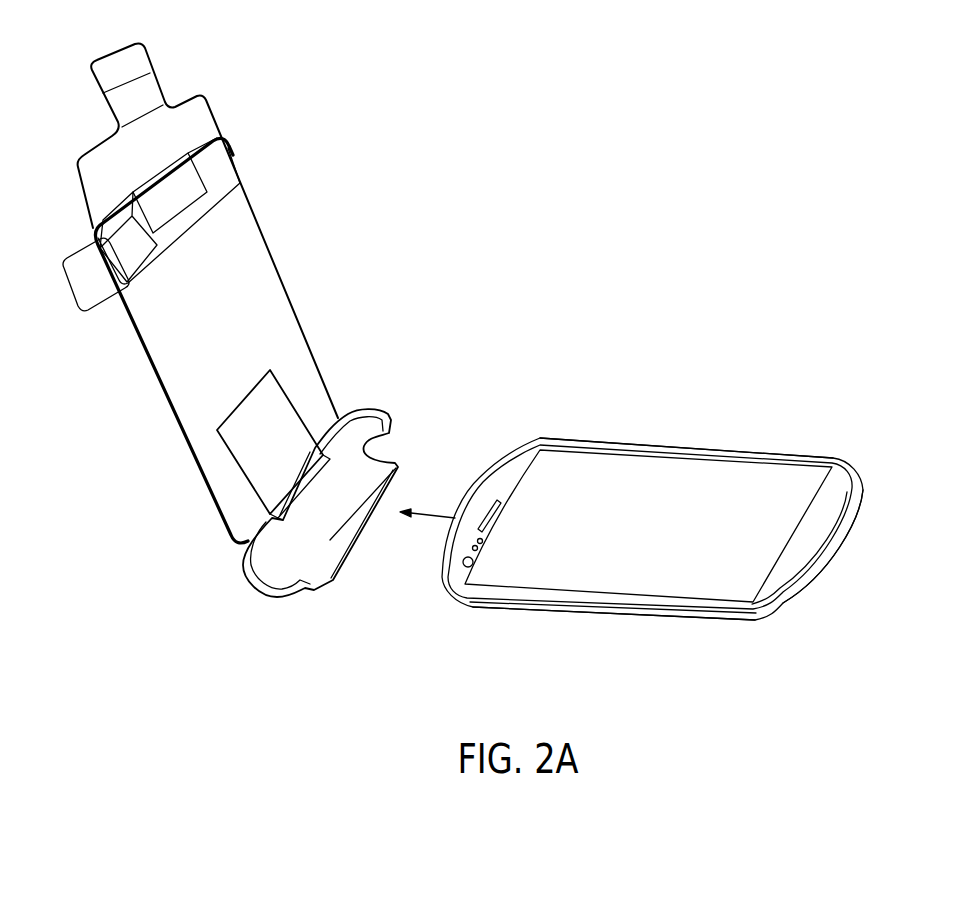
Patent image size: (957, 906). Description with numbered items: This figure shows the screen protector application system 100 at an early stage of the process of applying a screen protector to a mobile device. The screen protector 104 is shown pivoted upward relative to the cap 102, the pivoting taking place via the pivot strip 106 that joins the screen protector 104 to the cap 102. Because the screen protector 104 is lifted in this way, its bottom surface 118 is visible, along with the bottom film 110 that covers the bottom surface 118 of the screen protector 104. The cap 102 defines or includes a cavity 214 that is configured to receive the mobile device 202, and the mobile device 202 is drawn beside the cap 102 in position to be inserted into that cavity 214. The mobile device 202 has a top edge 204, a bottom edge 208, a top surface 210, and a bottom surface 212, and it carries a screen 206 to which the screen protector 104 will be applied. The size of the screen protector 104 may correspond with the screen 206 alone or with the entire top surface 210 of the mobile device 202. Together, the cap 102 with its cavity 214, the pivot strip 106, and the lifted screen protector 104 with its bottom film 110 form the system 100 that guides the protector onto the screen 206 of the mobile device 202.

The system 100 is at (238, 357).
The cap 102 is at (370, 408).
The screen protector 104 is at (165, 343).
The pivot strip 106 is at (267, 402).
The bottom film 110 is at (257, 270).
The bottom surface 118 is at (239, 230).
The mobile device 202 is at (658, 535).
The top edge 204 is at (429, 602).
The screen 206 is at (690, 478).
The bottom edge 208 is at (873, 522).
The top surface 210 is at (631, 426).
The bottom surface 212 is at (689, 643).
The cavity 214 is at (330, 540).